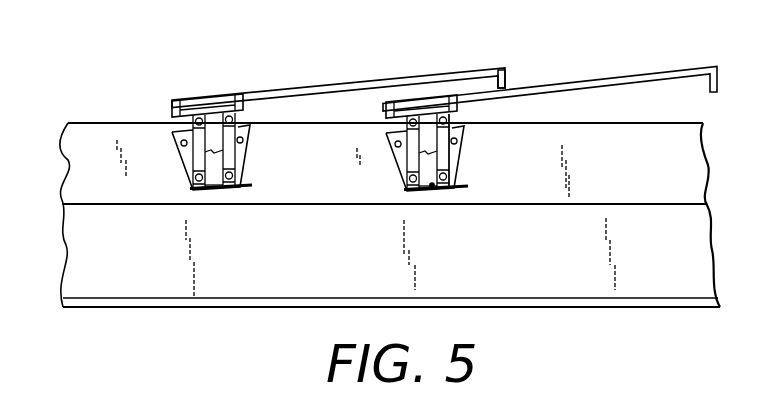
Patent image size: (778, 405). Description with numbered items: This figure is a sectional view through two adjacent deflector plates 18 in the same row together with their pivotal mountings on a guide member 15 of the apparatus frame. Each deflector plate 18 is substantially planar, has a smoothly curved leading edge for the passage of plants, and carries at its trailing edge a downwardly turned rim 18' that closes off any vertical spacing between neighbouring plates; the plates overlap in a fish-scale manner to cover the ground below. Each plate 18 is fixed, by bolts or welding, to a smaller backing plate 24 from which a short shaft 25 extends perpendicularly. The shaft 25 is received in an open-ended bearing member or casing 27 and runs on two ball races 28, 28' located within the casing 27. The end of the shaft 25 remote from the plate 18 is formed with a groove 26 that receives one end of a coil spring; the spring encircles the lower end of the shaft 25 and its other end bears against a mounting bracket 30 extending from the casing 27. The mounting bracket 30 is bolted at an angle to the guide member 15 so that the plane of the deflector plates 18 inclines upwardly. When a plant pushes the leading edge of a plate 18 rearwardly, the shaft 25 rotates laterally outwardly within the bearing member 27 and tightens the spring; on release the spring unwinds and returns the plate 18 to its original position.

The guide member 15 is at (60, 192).
The deflector plate 18 is at (444, 67).
The downwardly turned rim 18' is at (539, 55).
The backing plate 24 is at (175, 115).
The shaft 25 is at (213, 176).
The groove 26 is at (432, 188).
The bearing member 27 is at (246, 160).
The ball race 28 is at (184, 148).
The ball race 28' is at (246, 185).
The mounting bracket 30 is at (460, 155).